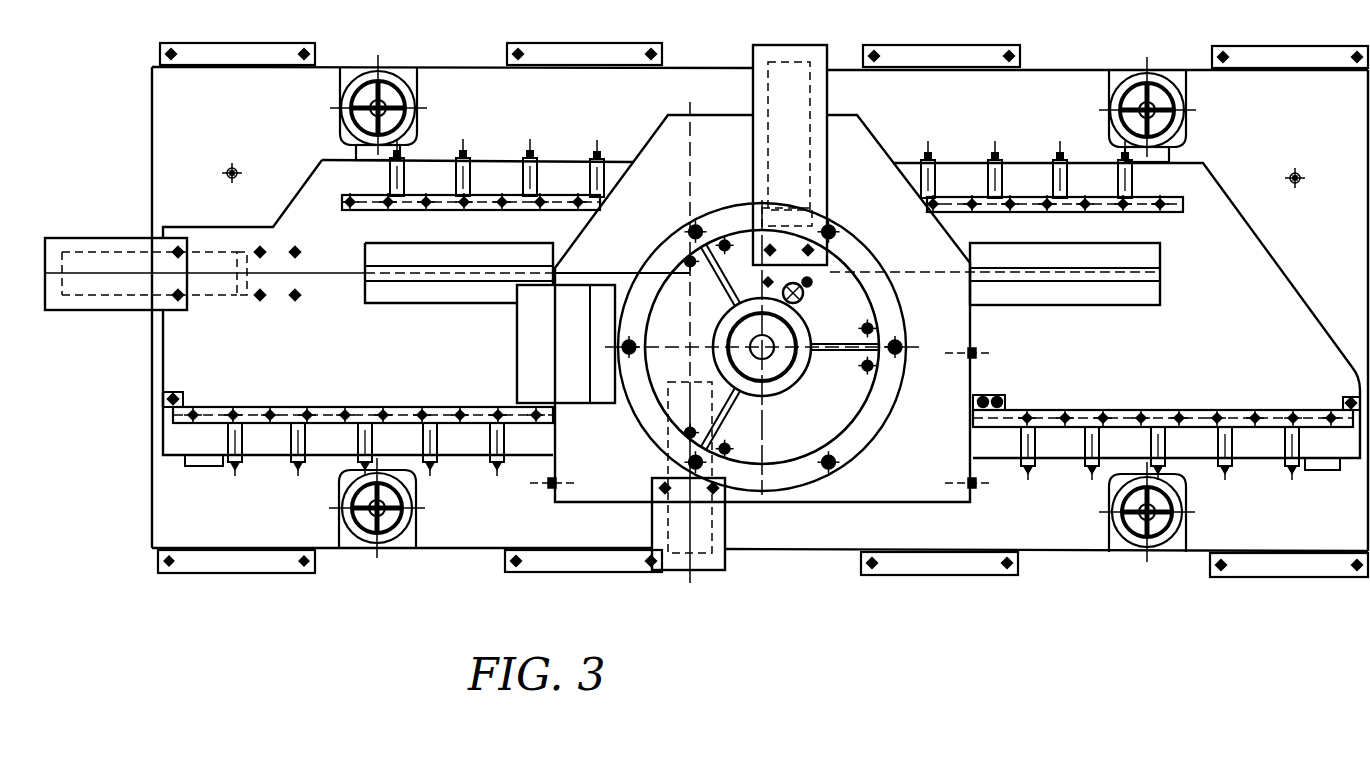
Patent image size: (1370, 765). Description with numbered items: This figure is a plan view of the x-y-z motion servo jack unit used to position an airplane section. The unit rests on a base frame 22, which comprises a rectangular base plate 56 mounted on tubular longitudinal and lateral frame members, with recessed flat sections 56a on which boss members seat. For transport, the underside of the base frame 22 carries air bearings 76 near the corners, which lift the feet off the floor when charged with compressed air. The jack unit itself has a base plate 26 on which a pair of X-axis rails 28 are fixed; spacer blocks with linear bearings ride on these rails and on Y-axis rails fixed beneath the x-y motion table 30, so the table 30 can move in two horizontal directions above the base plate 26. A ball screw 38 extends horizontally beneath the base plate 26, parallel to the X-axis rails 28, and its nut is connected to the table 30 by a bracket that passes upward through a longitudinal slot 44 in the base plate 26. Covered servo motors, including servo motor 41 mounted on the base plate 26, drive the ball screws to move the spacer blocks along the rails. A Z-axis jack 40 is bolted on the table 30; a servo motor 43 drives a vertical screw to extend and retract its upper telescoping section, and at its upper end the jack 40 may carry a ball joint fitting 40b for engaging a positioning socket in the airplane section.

The base frame 22 is at (148, 497).
The base plate 26 is at (183, 352).
The X-axis rails 28 is at (293, 407).
The x-y motion table 30 is at (950, 322).
The ball screw 38 is at (527, 268).
The Z-axis jack 40 is at (115, 310).
The ball joint fitting 40b is at (785, 368).
The servo motor 41 is at (712, 575).
The servo motor 43 is at (757, 62).
The longitudinal slot 44 is at (1150, 292).
The rectangular base plate 56 is at (452, 532).
The recessed flat section 56a is at (411, 533).
The air bearings 76 is at (258, 573).